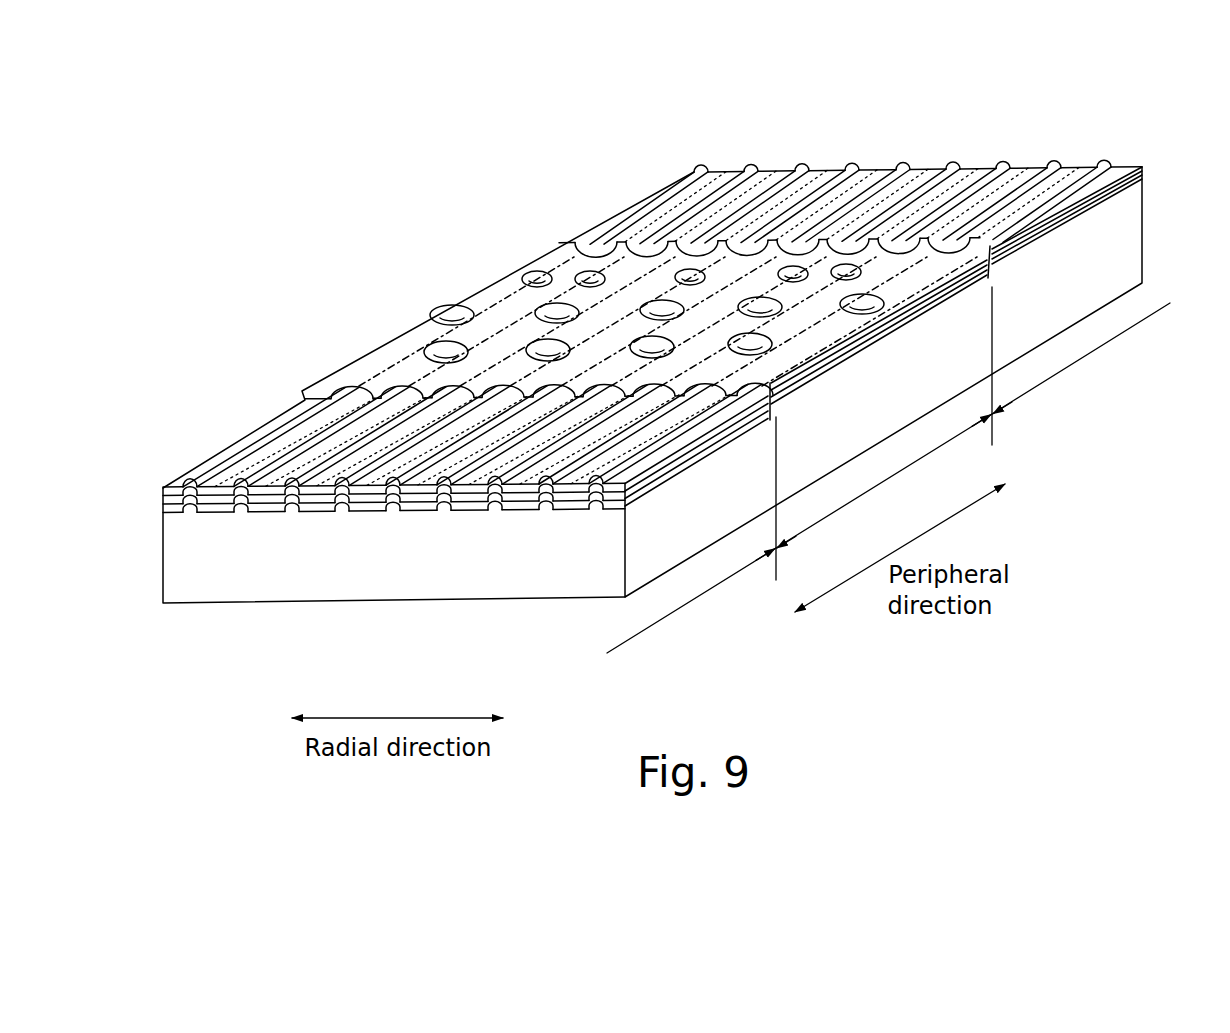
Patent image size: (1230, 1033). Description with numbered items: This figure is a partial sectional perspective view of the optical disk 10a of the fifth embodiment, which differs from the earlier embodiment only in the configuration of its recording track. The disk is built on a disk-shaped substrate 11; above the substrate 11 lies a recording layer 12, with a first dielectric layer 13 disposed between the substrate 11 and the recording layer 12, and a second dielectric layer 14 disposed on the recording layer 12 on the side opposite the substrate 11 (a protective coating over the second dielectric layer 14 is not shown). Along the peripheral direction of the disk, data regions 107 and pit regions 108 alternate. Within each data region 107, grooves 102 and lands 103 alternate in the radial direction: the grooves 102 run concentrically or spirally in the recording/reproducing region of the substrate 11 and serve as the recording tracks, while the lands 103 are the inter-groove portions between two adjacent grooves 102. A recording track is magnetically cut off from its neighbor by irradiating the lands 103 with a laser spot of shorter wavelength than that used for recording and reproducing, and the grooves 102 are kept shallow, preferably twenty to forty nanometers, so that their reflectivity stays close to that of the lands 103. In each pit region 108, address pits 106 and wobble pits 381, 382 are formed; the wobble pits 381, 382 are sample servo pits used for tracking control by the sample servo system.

The optical disk 10a is at (712, 150).
The substrate 11 is at (313, 562).
The recording layer 12 is at (470, 497).
The first dielectric layer 13 is at (402, 512).
The second dielectric layer 14 is at (532, 492).
The groove 102 is at (305, 458).
The land 103 is at (402, 409).
The address pit 106 is at (580, 279).
The wobble pit 381 is at (537, 340).
The wobble pit 382 is at (541, 305).
The data region 107 is at (888, 470).
The pit region 108 is at (884, 481).